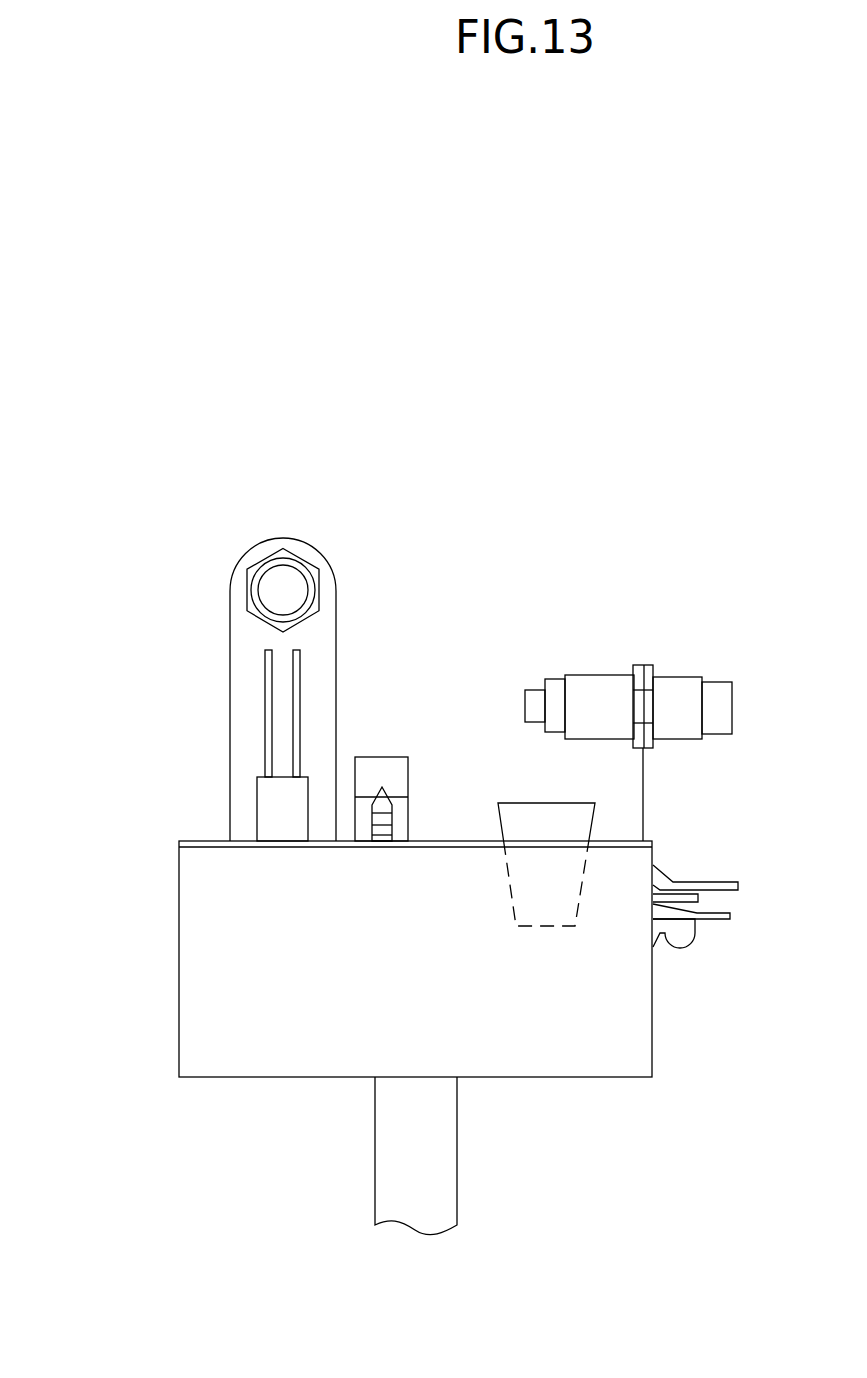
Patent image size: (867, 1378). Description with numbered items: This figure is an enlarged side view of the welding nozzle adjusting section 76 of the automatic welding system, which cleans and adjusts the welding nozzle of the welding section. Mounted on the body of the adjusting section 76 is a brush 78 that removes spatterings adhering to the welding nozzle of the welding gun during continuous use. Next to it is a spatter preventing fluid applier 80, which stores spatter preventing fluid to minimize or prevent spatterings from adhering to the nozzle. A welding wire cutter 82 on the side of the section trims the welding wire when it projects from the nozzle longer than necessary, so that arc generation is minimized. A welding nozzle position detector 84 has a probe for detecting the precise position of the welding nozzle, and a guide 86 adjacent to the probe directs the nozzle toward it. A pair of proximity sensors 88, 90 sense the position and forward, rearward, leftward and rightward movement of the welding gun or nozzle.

The welding nozzle adjusting section 76 is at (179, 945).
The brush 78 is at (272, 800).
The spatter preventing fluid applier 80 is at (495, 813).
The welding wire cutter 82 is at (717, 885).
The welding nozzle position detector 84 is at (383, 823).
The guide 86 is at (382, 768).
The proximity sensor 88 is at (732, 703).
The proximity sensor 90 is at (295, 585).